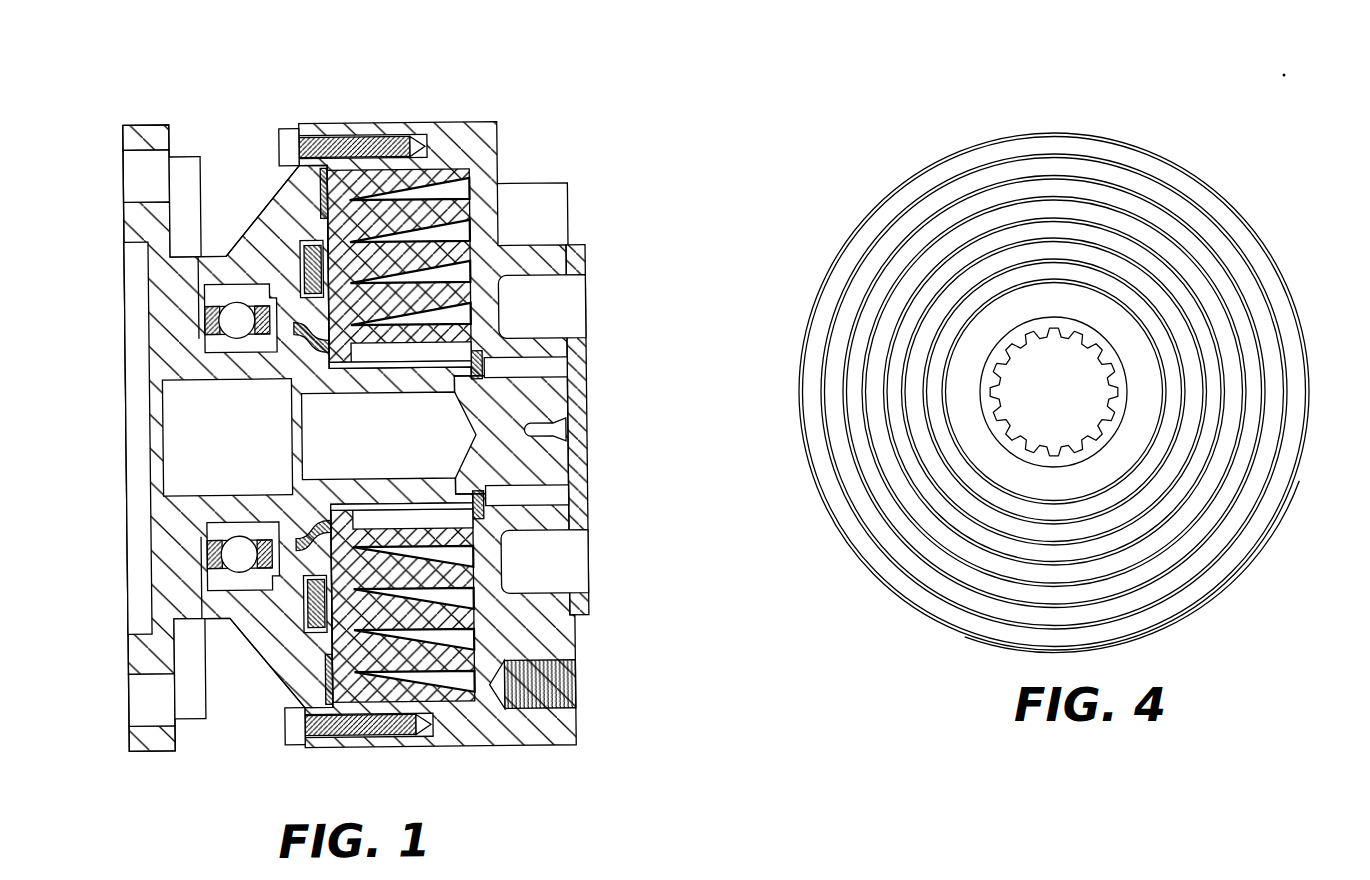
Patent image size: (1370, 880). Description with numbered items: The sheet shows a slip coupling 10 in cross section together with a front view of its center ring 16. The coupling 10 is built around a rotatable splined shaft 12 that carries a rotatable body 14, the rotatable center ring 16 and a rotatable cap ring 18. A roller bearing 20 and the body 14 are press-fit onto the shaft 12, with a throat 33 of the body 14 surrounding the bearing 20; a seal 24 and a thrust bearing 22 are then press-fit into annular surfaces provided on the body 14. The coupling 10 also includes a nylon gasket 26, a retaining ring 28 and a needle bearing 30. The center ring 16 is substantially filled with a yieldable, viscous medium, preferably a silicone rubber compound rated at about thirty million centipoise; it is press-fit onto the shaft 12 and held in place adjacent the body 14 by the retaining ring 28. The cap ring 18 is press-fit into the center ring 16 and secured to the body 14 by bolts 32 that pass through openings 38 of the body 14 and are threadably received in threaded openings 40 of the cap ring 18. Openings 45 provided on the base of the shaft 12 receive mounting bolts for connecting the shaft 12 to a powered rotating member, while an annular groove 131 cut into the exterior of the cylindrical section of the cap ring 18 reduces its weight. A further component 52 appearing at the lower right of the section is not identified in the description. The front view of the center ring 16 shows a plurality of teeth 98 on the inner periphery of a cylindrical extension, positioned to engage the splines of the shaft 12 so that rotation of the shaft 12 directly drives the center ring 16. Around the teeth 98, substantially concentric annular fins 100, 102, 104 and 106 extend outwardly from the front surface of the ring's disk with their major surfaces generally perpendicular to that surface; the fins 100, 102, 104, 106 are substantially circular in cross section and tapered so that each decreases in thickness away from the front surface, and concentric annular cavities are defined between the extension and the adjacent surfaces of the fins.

In FIG. 1, the slip coupling 10 is at (222, 71).
In FIG. 1, the splined shaft 12 is at (178, 354).
In FIG. 1, the body 14 is at (262, 258).
In FIG. 1, the center ring 16 is at (422, 125).
In FIG. 1, the cap ring 18 is at (487, 267).
In FIG. 1, the roller bearing 20 is at (222, 352).
In FIG. 1, the thrust bearing 22 is at (303, 257).
In FIG. 1, the seal 24 is at (315, 358).
In FIG. 1, the nylon gasket 26 is at (323, 192).
In FIG. 1, the retaining ring 28 is at (500, 330).
In FIG. 1, the needle bearing 30 is at (545, 370).
In FIG. 1, the bolts 32 is at (283, 128).
In FIG. 1, the throat 33 is at (233, 265).
In FIG. 1, the openings 38 is at (347, 737).
In FIG. 1, the threaded openings 40 is at (372, 752).
In FIG. 1, the openings 45 is at (135, 180).
In FIG. 1, the set screw 52 is at (575, 690).
In FIG. 1, the annular groove 131 is at (587, 300).
In FIG. 4, the teeth 98 is at (1067, 336).
In FIG. 4, the annular fin 100 is at (1163, 440).
In FIG. 4, the annular fin 102 is at (1204, 338).
In FIG. 4, the annular fin 104 is at (1223, 282).
In FIG. 4, the annular fin 106 is at (1234, 232).